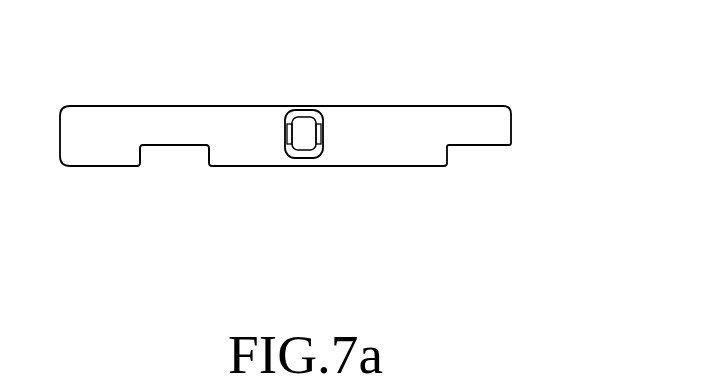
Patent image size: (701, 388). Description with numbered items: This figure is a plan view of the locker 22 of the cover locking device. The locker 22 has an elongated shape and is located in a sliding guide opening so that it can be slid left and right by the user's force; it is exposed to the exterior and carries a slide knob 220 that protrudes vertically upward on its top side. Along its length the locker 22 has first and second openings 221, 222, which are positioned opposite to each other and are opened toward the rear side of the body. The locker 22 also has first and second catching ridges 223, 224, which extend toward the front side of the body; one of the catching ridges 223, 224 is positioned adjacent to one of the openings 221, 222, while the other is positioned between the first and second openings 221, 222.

The locker 22 is at (528, 115).
The slide knob 220 is at (304, 127).
The first opening 221 is at (178, 151).
The second opening 222 is at (480, 153).
The first catching ridge 223 is at (103, 167).
The second catching ridge 224 is at (326, 168).